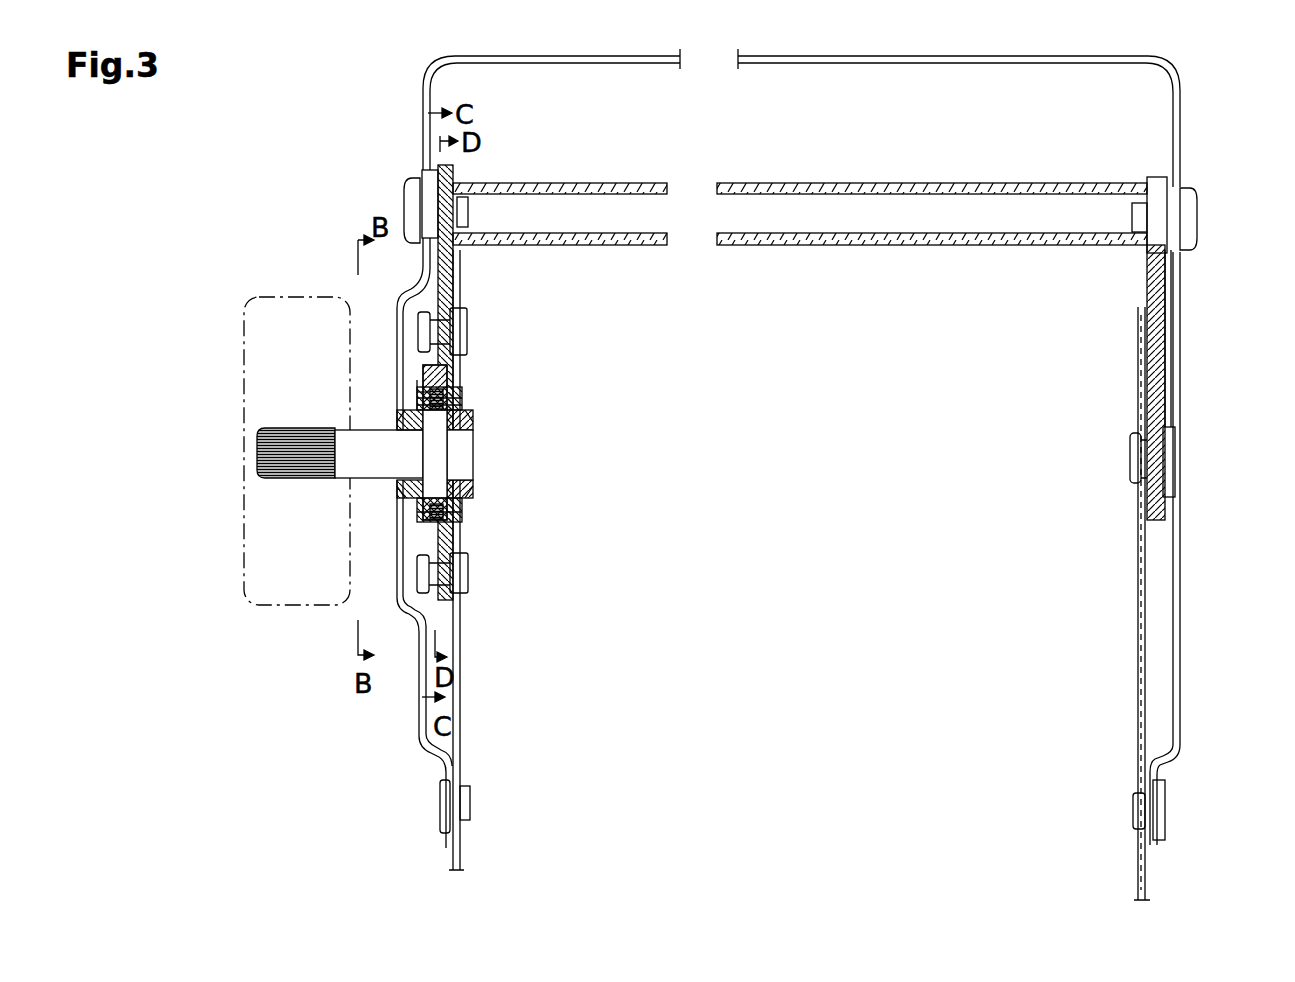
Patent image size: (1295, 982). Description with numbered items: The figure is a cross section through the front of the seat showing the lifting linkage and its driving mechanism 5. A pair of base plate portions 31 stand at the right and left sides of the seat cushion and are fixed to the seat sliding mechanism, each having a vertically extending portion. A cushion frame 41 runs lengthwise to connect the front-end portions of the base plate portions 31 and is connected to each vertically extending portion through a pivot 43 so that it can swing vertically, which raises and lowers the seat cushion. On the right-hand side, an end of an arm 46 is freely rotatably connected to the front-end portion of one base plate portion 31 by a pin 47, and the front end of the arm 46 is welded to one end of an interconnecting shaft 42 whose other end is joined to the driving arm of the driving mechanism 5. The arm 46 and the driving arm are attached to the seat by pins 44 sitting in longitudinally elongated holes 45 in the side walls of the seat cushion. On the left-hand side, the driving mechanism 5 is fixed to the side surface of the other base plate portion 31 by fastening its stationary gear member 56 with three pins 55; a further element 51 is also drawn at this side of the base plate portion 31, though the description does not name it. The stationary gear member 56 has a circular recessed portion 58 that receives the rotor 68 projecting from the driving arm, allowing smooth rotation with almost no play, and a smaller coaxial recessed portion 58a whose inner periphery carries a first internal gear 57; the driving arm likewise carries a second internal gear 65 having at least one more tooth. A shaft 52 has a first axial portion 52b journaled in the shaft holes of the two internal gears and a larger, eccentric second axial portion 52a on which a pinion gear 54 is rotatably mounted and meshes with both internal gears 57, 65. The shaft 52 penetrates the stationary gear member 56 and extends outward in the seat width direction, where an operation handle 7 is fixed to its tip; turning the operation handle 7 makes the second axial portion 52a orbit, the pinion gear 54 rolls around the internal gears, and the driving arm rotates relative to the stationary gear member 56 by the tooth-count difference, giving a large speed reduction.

The driving mechanism 5 is at (504, 432).
The operation handle 7 is at (284, 320).
The base plate portion 31 is at (462, 638).
The cushion frame 41 is at (422, 105).
The interconnecting shaft 42 is at (552, 246).
The pivot 43 is at (440, 800).
The pin 44 is at (404, 207).
The elongated hole 45 is at (430, 178).
The arm 46 is at (1160, 330).
The pin 47 is at (1167, 460).
The plate 51 is at (455, 286).
The shaft 52 is at (484, 463).
The second axial portion 52a is at (465, 508).
The first axial portion 52b is at (385, 468).
The pinion gear 54 is at (460, 410).
The pin 55 is at (468, 330).
The stationary gear member 56 is at (420, 523).
The first internal gear 57 is at (418, 380).
The recessed portion 58 is at (425, 527).
The recessed portion 58a is at (422, 384).
The second internal gear 65 is at (452, 388).
The rotor 68 is at (450, 382).